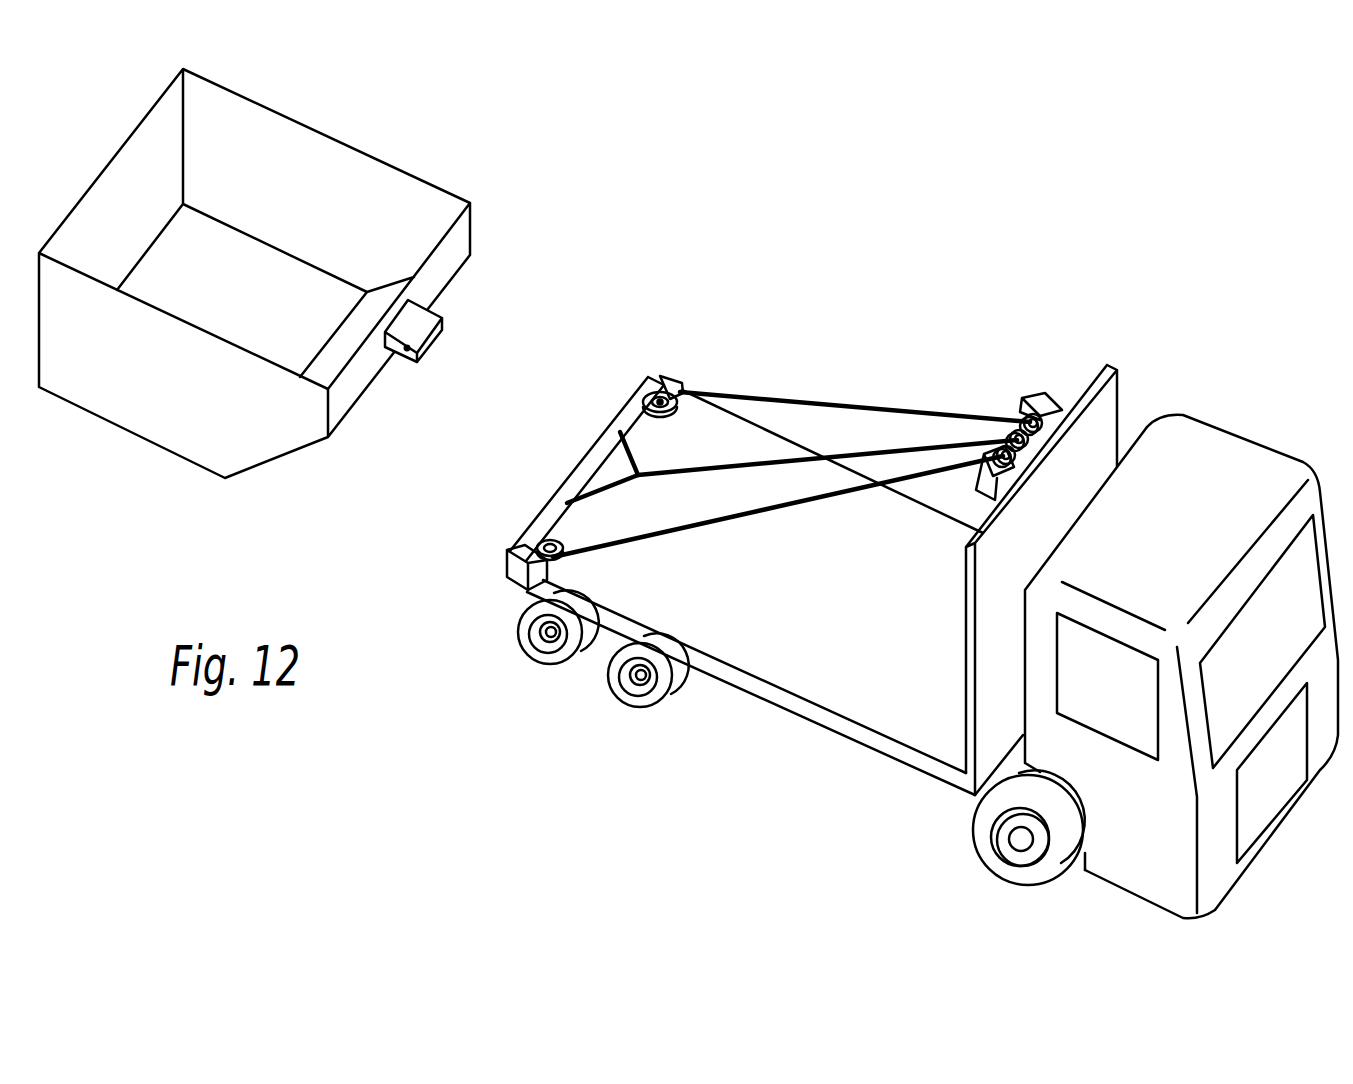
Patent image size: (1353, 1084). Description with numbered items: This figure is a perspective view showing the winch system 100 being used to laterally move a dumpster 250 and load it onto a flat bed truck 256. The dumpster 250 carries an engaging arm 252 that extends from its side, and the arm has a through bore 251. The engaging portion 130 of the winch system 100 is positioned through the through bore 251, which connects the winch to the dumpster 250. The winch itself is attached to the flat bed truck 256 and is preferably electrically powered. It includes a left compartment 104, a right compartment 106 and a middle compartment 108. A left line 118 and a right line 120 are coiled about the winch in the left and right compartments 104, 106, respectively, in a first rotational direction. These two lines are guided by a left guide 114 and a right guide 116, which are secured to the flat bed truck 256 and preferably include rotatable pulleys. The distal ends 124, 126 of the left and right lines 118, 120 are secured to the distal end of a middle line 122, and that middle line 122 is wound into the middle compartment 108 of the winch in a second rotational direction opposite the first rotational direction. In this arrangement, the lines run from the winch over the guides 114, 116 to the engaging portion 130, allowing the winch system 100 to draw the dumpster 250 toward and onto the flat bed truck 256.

The winch system 100 is at (1021, 363).
The left compartment 104 is at (1045, 416).
The right compartment 106 is at (1016, 452).
The middle compartment 108 is at (1026, 440).
The left guide 114 is at (662, 377).
The right guide 116 is at (519, 544).
The left line 118 is at (815, 398).
The right line 120 is at (701, 527).
The middle line 122 is at (760, 468).
The distal end of left line 124 is at (630, 450).
The distal end of right line 126 is at (590, 496).
The engaging portion 130 is at (582, 462).
The dumpster 250 is at (378, 158).
The through bore 251 is at (407, 350).
The engaging arm 252 is at (428, 318).
The flat bed truck 256 is at (1268, 463).